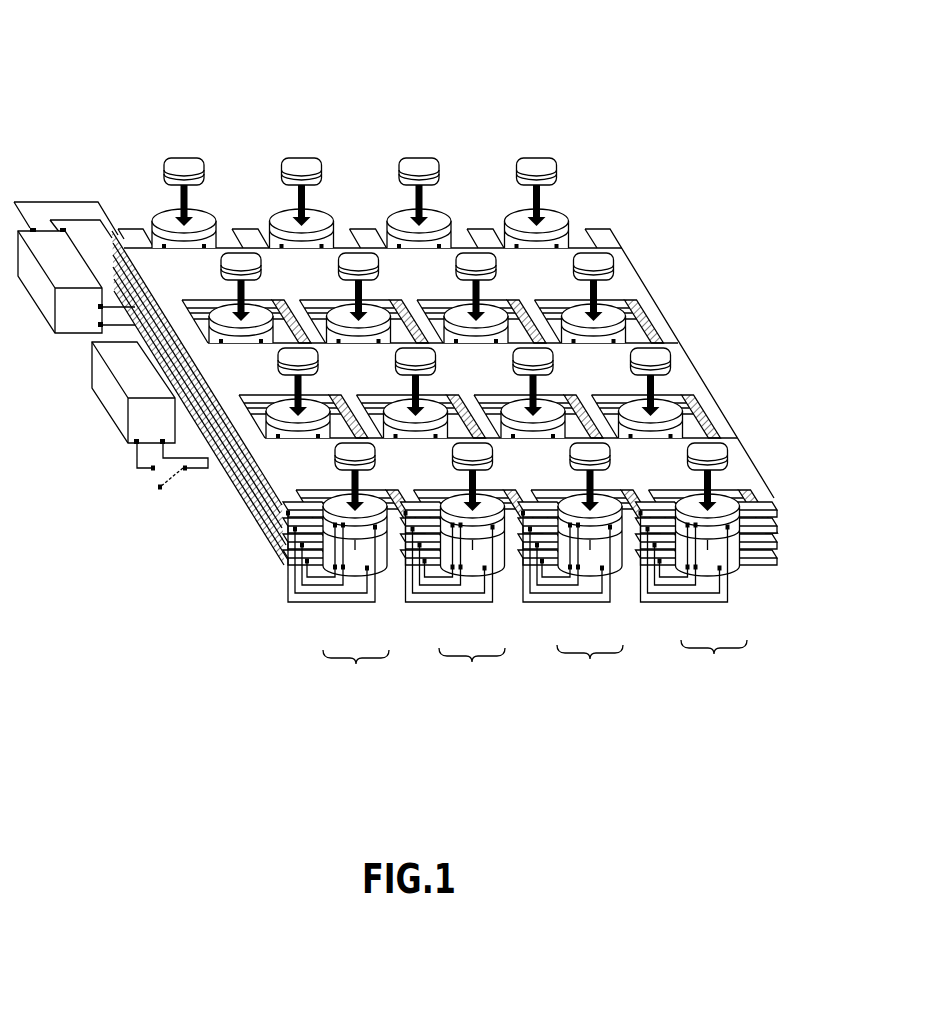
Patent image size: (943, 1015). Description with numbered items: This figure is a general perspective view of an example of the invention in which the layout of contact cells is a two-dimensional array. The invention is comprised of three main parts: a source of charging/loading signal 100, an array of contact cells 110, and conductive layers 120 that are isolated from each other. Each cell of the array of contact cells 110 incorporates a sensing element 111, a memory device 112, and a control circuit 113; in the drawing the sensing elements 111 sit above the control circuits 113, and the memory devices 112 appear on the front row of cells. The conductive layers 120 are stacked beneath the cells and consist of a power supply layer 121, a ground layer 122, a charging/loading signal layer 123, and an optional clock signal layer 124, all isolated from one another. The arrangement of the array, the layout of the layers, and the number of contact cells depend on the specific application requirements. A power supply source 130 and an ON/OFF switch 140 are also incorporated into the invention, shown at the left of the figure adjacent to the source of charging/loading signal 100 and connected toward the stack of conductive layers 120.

The source of charging/loading signal 100 is at (47, 327).
The array of contact cells 110 is at (535, 668).
The sensing element 111 is at (540, 156).
The memory device 112 is at (748, 608).
The control circuit 113 is at (765, 468).
The conductive layers 120 is at (505, 397).
The power supply layer 121 is at (780, 559).
The ground layer 122 is at (780, 543).
The charging/loading signal layer 123 is at (780, 527).
The clock signal layer 124 is at (780, 510).
The power supply source 130 is at (105, 407).
The ON/OFF switch 140 is at (180, 487).